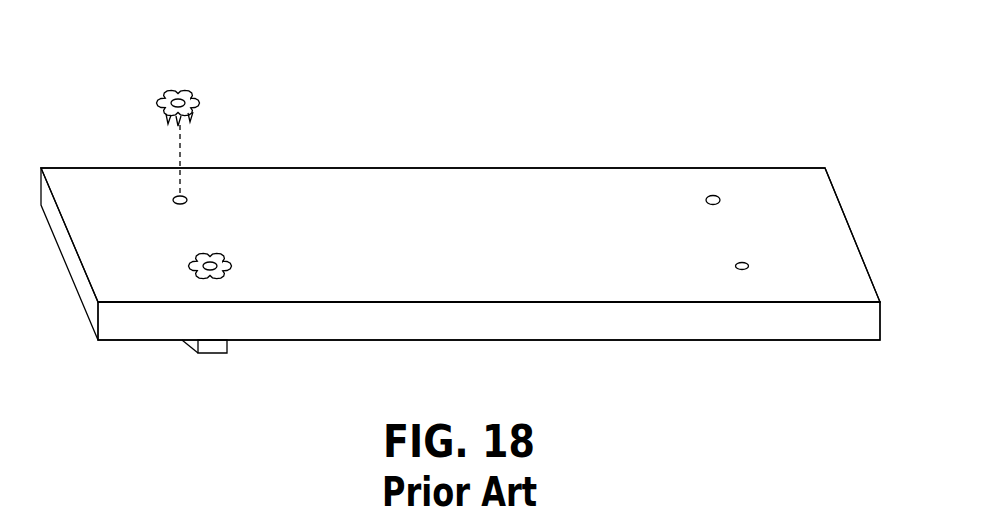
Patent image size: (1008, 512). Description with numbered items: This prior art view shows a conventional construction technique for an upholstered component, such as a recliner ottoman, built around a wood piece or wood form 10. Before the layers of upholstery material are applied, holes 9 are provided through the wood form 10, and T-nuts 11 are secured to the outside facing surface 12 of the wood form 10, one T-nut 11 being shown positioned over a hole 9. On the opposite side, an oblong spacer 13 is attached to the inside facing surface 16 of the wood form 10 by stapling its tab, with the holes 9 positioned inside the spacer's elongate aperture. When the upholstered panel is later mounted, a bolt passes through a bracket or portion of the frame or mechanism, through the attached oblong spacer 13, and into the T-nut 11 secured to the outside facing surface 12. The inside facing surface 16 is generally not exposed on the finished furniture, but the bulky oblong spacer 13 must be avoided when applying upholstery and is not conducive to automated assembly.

The holes 9 is at (190, 200).
The wood form 10 is at (535, 197).
The T-nut 11 is at (200, 90).
The outside facing surface 12 is at (357, 197).
The oblong spacer 13 is at (212, 355).
The inside facing surface 16 is at (358, 342).